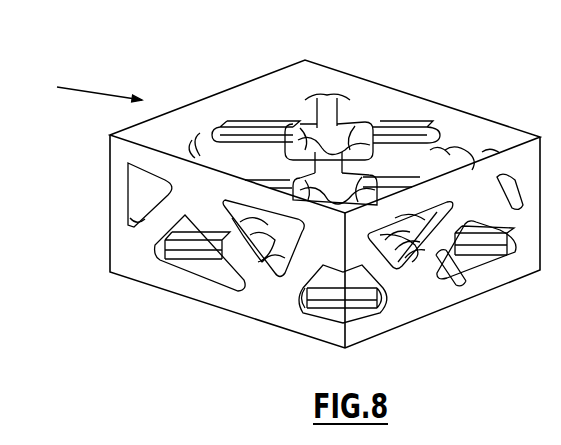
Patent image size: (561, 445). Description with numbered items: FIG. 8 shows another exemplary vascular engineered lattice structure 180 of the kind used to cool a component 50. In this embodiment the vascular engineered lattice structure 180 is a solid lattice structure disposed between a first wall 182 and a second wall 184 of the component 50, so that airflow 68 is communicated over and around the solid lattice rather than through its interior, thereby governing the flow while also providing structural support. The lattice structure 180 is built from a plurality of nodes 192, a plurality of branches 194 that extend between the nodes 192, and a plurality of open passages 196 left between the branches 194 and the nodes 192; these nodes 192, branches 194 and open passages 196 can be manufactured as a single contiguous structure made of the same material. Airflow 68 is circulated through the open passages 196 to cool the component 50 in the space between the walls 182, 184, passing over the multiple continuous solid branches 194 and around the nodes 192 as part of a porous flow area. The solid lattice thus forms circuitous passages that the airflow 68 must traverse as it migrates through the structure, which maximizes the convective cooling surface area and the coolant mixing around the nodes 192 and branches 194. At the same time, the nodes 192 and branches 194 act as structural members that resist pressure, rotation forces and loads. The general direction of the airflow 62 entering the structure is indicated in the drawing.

The component 50 is at (457, 63).
The flow direction 62 is at (80, 88).
The airflow 68 is at (318, 143).
The vascular engineered lattice structure 180 is at (303, 103).
The first wall 182 is at (192, 115).
The second wall 184 is at (187, 297).
The nodes 192 is at (372, 118).
The branches 194 is at (317, 122).
The open passages 196 is at (355, 195).